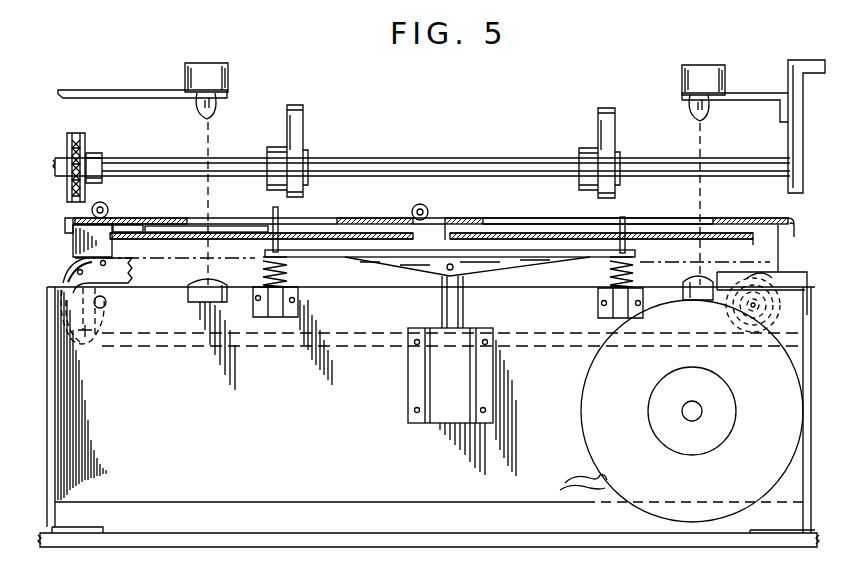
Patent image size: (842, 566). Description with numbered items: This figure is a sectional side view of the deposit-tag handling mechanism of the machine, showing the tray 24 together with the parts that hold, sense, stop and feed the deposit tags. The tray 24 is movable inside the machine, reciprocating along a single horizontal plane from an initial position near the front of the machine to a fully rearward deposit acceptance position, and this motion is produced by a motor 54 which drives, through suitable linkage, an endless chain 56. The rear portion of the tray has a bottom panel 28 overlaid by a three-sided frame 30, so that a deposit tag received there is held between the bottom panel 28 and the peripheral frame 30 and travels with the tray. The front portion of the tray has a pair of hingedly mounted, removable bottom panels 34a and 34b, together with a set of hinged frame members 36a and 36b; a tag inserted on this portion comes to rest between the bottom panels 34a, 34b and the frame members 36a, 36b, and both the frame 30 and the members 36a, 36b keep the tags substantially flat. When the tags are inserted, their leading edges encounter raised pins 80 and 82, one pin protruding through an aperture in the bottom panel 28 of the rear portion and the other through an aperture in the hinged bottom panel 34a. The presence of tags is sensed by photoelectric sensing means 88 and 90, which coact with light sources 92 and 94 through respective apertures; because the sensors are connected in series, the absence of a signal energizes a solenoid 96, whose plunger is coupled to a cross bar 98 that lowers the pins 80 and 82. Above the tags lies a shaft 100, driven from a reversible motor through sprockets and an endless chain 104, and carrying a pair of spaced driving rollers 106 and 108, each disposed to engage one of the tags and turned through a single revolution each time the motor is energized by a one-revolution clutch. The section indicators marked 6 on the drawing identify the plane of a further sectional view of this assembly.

The tray 24 is at (485, 207).
The bottom panel 28 is at (668, 236).
The three-sided frame 30 is at (728, 222).
The hinged bottom panel 34a is at (236, 227).
The hinged bottom panel 34b is at (308, 238).
The hinged frame member 36a is at (155, 221).
The hinged frame member 36b is at (353, 220).
The motor 54 is at (622, 420).
The endless chain 56 is at (74, 282).
The raised pin 80 is at (278, 218).
The raised pin 82 is at (625, 218).
The photoelectric sensing means 88 is at (190, 292).
The photoelectric sensing means 90 is at (698, 293).
The light source 92 is at (212, 70).
The light source 94 is at (710, 70).
The solenoid 96 is at (430, 390).
The cross bar 98 is at (466, 266).
The shaft 100 is at (381, 164).
The endless chain 104 is at (84, 143).
The driving roller 106 is at (606, 108).
The driving roller 108 is at (300, 124).
The section line 6 is at (262, 140).